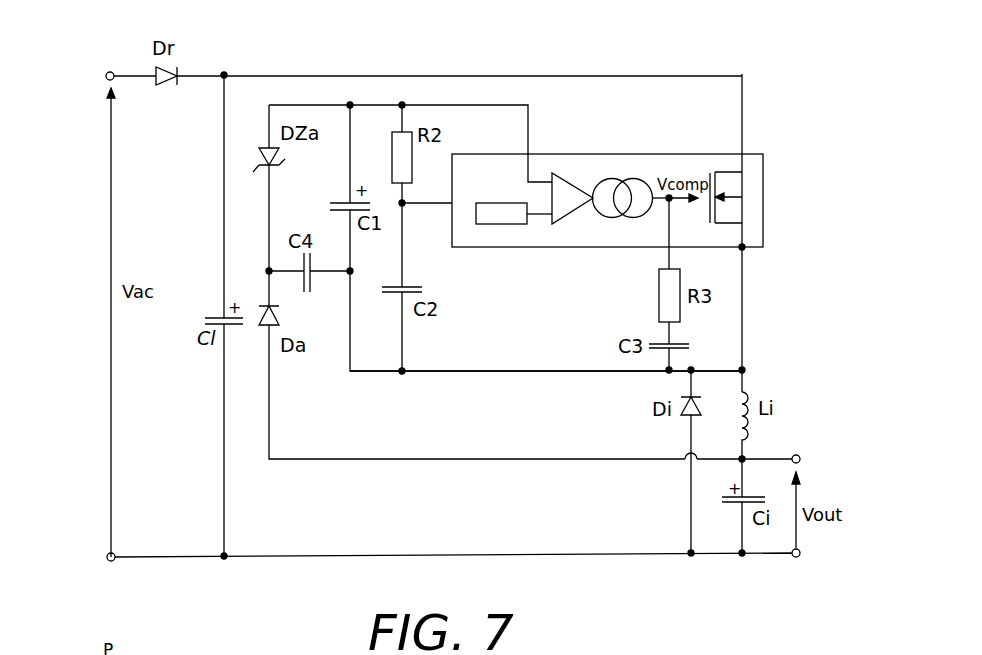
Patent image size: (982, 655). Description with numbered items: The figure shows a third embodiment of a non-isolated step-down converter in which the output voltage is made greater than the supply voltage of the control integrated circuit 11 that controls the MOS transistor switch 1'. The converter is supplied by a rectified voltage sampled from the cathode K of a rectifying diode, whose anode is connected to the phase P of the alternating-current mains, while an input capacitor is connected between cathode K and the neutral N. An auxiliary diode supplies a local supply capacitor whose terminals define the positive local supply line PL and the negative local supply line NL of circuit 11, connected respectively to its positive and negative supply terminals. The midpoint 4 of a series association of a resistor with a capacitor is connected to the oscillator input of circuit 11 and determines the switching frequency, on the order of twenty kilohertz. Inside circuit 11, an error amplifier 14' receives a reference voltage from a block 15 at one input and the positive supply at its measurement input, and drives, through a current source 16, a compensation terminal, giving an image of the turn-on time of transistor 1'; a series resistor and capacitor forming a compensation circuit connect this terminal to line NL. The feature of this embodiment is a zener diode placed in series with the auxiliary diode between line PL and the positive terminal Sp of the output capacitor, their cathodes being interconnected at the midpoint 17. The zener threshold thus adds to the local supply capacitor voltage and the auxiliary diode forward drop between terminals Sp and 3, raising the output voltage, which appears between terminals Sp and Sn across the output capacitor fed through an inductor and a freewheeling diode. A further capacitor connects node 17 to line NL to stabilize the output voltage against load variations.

The midpoint 17 is at (268, 271).
The error amplifier 14' is at (585, 169).
The integrated circuit 11 is at (763, 166).
The MOS transistor 1' is at (753, 197).
The midpoint 4 is at (403, 205).
The block 15 is at (504, 226).
The current source 16 is at (605, 220).
The terminal 3 is at (745, 369).
The phase P is at (110, 72).
The neutral N is at (107, 557).
The cathode K is at (224, 73).
The positive local supply line PL is at (470, 105).
The negative local supply line NL is at (485, 372).
The positive terminal Sp is at (797, 455).
The negative terminal Sn is at (795, 557).